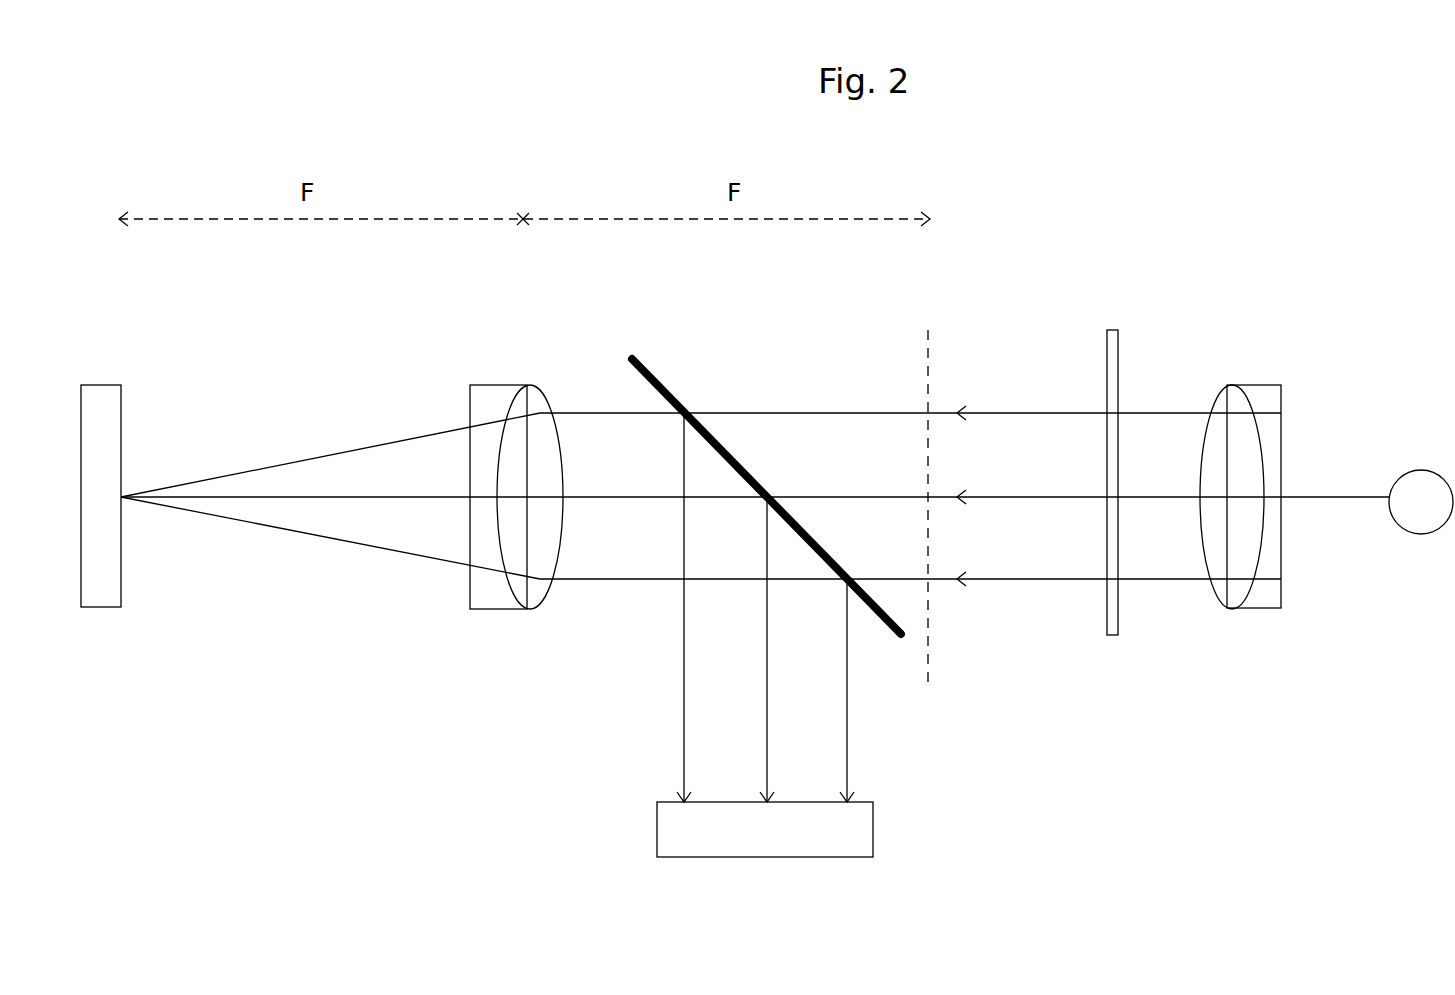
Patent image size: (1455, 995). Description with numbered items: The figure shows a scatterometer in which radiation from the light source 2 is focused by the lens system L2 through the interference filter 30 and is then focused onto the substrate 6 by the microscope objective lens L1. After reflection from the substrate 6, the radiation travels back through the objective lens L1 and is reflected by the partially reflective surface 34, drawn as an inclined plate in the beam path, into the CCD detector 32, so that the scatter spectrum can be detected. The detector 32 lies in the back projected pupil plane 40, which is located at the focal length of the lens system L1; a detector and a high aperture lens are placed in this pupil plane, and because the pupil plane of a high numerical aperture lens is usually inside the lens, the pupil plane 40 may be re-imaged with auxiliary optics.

The light source 2 is at (1430, 517).
The substrate 6 is at (109, 508).
The interference filter 30 is at (1118, 635).
The CCD detector 32 is at (782, 845).
The partially reflective surface 34 is at (892, 642).
The back projected pupil plane 40 is at (928, 690).
The microscope objective lens L1 is at (497, 385).
The lens system L2 is at (1253, 385).